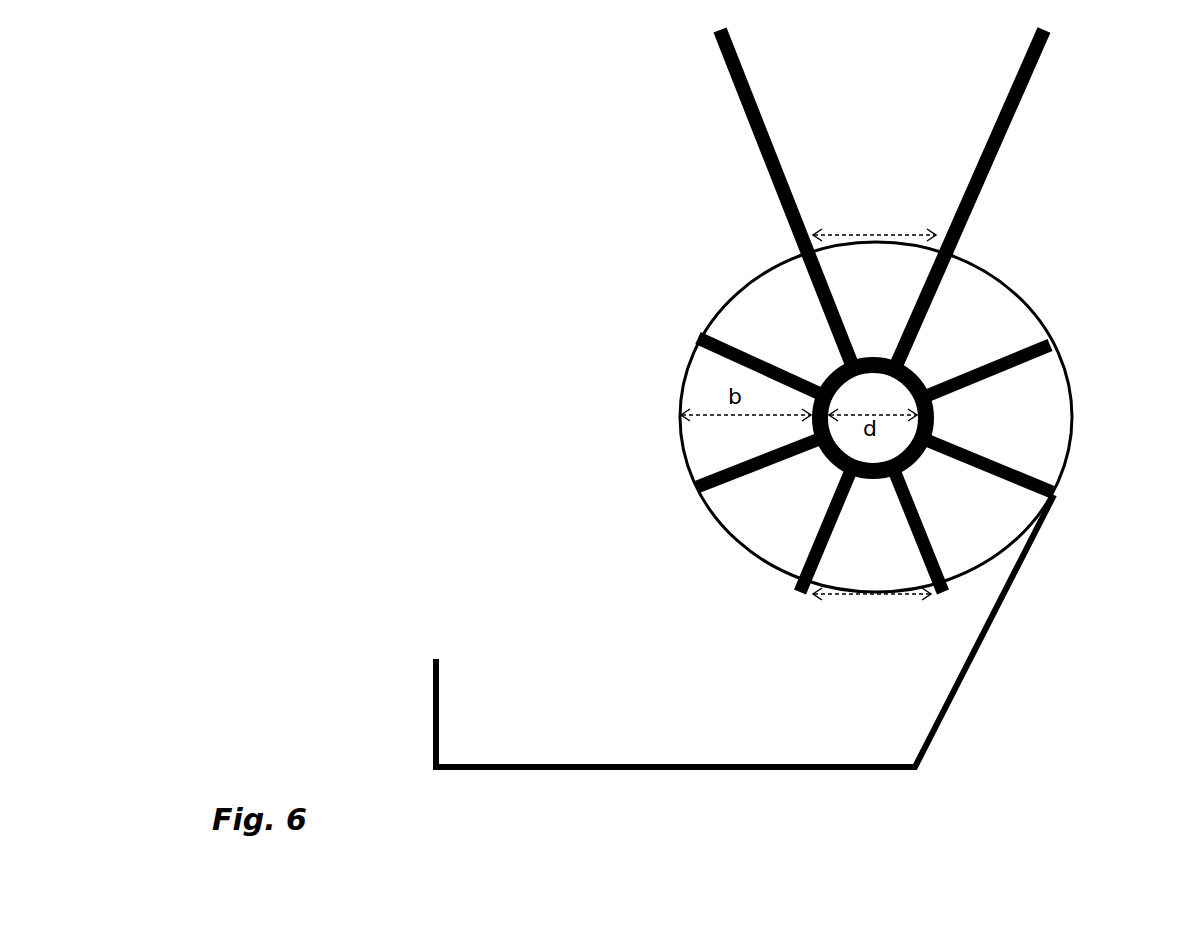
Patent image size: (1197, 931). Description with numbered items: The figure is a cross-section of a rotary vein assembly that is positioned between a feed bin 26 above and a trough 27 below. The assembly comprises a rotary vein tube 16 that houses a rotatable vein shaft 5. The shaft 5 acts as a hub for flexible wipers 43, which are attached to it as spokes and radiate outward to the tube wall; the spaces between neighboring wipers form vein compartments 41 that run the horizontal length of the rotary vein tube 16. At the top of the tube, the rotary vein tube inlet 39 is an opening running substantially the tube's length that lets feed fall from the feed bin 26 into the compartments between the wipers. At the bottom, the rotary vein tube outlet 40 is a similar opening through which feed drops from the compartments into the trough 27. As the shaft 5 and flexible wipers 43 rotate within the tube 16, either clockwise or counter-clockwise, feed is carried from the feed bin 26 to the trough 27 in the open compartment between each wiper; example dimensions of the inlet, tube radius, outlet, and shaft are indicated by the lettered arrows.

The vein shaft 5 is at (873, 393).
The rotary vein tube 16 is at (728, 287).
The feed bin 26 is at (713, 70).
The trough 27 is at (622, 697).
The rotary vein tube inlet 39 is at (861, 225).
The rotary vein tube outlet 40 is at (857, 627).
The vein compartments 41 is at (976, 290).
The flexible wipers 43 is at (1015, 490).